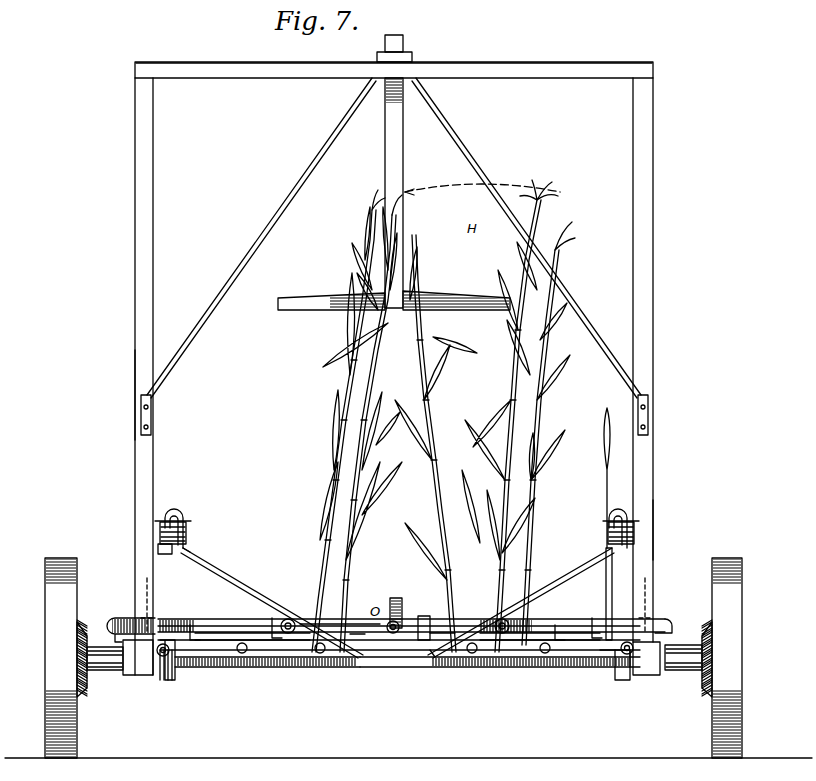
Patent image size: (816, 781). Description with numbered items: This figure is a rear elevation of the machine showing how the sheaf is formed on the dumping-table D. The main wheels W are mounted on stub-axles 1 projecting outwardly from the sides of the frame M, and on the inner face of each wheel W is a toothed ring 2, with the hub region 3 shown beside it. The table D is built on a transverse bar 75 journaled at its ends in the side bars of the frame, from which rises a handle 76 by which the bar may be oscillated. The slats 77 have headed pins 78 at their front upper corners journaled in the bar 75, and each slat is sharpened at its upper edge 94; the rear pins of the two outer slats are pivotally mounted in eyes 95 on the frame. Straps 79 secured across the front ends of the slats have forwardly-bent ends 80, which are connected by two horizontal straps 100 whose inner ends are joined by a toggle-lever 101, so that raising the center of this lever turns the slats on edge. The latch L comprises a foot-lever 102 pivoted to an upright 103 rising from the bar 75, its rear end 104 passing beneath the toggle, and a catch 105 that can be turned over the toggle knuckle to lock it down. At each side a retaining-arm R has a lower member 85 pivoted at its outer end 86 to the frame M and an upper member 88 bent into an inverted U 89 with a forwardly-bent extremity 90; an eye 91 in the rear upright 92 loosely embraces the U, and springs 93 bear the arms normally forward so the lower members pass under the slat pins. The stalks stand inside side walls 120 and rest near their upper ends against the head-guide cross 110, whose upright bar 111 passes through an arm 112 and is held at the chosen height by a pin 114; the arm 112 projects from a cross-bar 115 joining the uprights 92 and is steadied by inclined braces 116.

The stub-axles 1 is at (98, 645).
The toothed ring 2 is at (80, 690).
The axle 3 is at (394, 657).
The transverse bar 75 is at (438, 662).
The handle 76 is at (606, 462).
The slats 77 is at (312, 667).
The headed pins 78 is at (242, 655).
The straps 79 is at (206, 636).
The forwardly-bent ends 80 is at (195, 623).
The lower member 85 is at (300, 662).
The outer end 86 is at (624, 677).
The upper member 88 is at (196, 566).
The inverted-U bend 89 is at (186, 516).
The forwardly-bent extremity 90 is at (165, 552).
The eye or staple 91 is at (609, 552).
The rear upright 92 is at (140, 368).
The springs 93 is at (186, 532).
The sharpened upper edge 94 is at (236, 632).
The eyes 95 is at (160, 656).
The horizontal straps 100 is at (262, 617).
The toggle-lever 101 is at (343, 620).
The foot-lever 102 is at (394, 598).
The upright 103 is at (400, 620).
The rear end of foot-lever 104 is at (367, 635).
The catch or button 105 is at (440, 632).
The cross 110 is at (425, 297).
The upright bar 111 is at (403, 160).
The arm 112 is at (412, 60).
The pin 114 is at (403, 46).
The cross-bar 115 is at (278, 78).
The inclined braces 116 is at (268, 228).
The side walls 120 is at (148, 588).
The main wheels W is at (45, 598).
The retaining-arms R is at (397, 603).
The frame M is at (645, 672).
The dumping-table D is at (380, 650).
The latch L is at (424, 616).